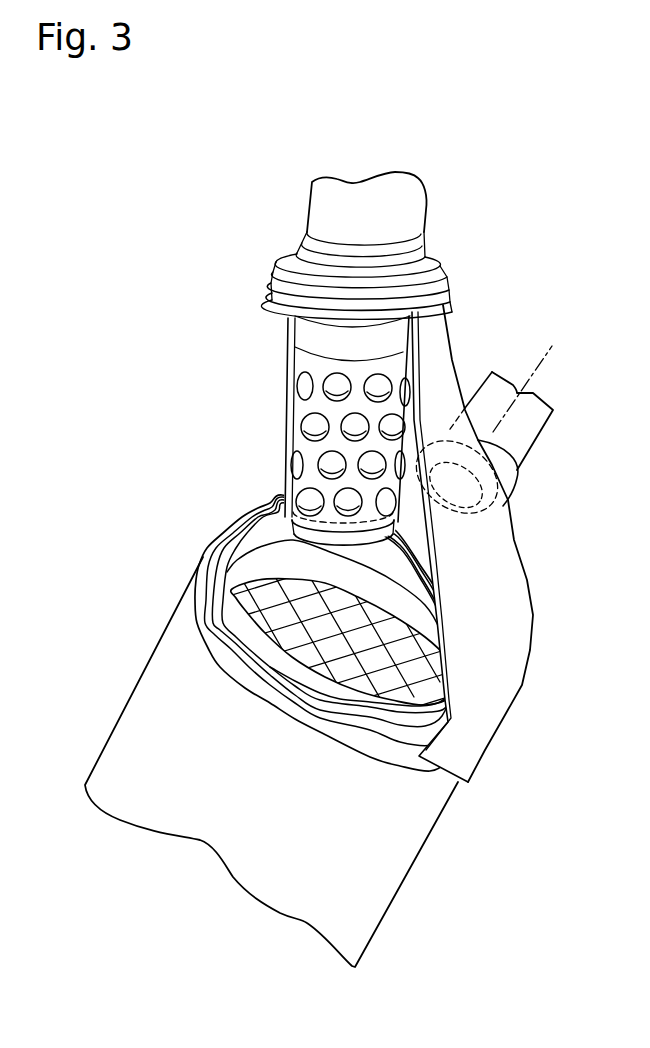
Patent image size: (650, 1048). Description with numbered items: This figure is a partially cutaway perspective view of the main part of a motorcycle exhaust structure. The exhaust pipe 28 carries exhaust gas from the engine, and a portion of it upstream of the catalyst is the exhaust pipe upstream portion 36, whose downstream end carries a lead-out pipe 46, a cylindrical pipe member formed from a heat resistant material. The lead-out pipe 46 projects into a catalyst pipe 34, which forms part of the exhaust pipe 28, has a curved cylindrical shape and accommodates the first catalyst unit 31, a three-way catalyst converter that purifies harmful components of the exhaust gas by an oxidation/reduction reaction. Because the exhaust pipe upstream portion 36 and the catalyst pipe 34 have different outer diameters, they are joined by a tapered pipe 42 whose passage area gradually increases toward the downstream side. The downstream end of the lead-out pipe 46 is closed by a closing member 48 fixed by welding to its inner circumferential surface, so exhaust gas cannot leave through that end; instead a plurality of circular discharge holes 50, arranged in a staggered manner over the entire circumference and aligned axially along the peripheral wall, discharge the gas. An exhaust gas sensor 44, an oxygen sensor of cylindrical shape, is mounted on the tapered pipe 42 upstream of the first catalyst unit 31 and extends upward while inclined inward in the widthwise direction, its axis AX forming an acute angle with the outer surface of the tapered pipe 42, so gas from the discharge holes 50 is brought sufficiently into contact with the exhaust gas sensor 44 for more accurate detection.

The exhaust pipe upstream portion 36 is at (426, 197).
The exhaust pipe 28 is at (410, 245).
The lead-out pipe 46 is at (298, 356).
The discharge hole 50 is at (300, 427).
The closing member 48 is at (250, 561).
The tapered pipe 42 is at (520, 624).
The exhaust gas sensor 44 is at (531, 447).
The catalyst pipe 34 is at (113, 727).
The first catalyst unit 31 is at (390, 678).
The axis AX is at (556, 352).